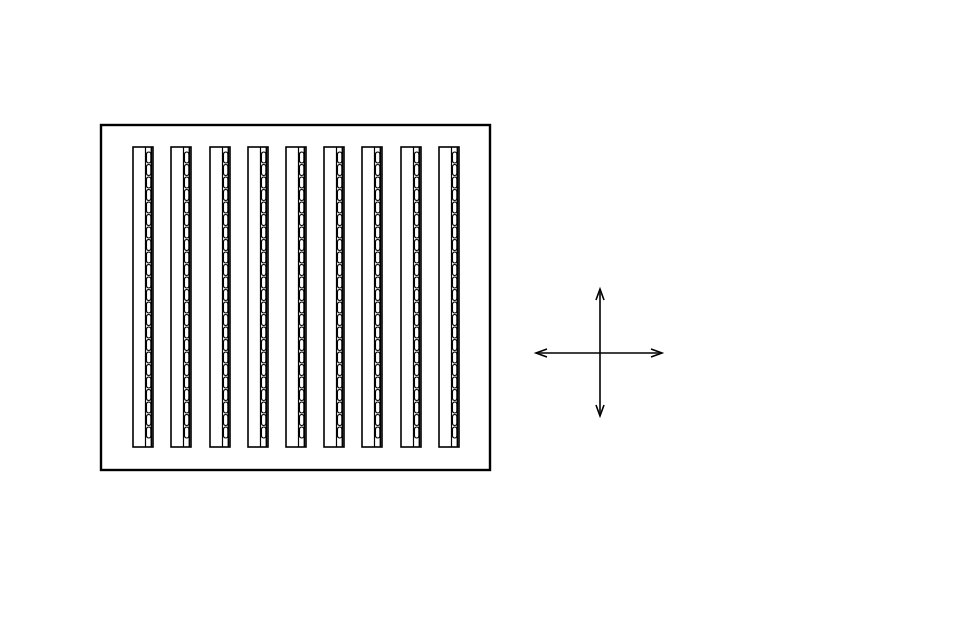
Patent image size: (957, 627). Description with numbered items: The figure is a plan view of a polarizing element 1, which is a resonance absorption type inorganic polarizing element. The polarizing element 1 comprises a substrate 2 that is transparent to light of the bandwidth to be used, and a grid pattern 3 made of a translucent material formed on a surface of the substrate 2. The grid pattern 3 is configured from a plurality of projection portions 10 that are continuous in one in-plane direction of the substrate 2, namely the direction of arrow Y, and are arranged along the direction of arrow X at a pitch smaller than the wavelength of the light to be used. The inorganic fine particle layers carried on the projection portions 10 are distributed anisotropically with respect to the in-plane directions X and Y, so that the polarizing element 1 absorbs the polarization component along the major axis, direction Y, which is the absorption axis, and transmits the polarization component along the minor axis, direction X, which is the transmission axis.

The polarizing element 1 is at (51, 70).
The substrate 2 is at (476, 135).
The grid pattern 3 is at (278, 163).
The projection portion 10 is at (217, 146).